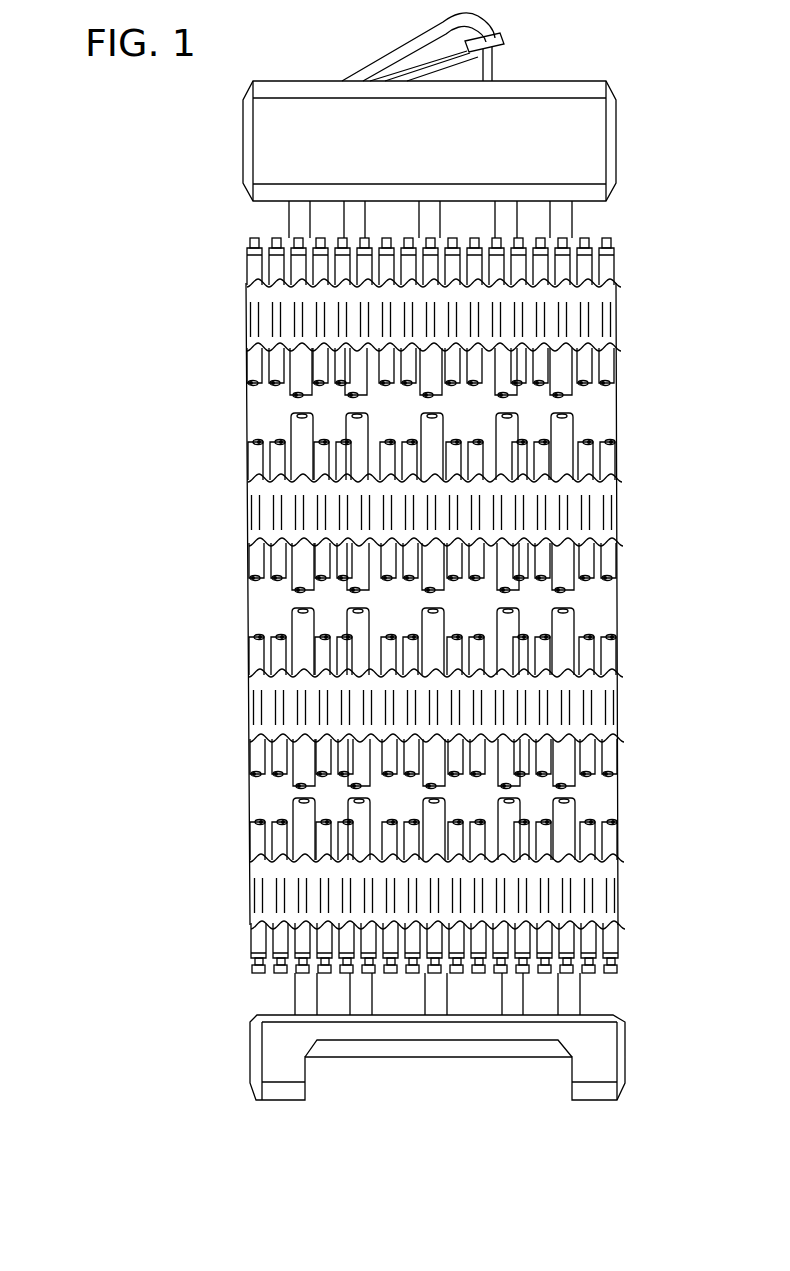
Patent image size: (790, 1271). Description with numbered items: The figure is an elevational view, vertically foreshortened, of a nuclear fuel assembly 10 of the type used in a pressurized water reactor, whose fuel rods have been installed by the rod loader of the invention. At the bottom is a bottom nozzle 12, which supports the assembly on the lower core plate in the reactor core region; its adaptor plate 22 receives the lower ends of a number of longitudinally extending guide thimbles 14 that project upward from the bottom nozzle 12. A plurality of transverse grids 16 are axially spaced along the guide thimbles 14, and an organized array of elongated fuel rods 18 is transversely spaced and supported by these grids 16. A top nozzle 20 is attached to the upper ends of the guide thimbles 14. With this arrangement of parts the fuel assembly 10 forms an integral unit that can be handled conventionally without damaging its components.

The nuclear fuel assembly 10 is at (510, 30).
The bottom nozzle 12 is at (251, 1043).
The guide thimbles 14 is at (569, 217).
The transverse grids 16 is at (613, 488).
The fuel rods 18 is at (606, 273).
The top nozzle 20 is at (640, 113).
The adaptor plate 22 is at (461, 1030).